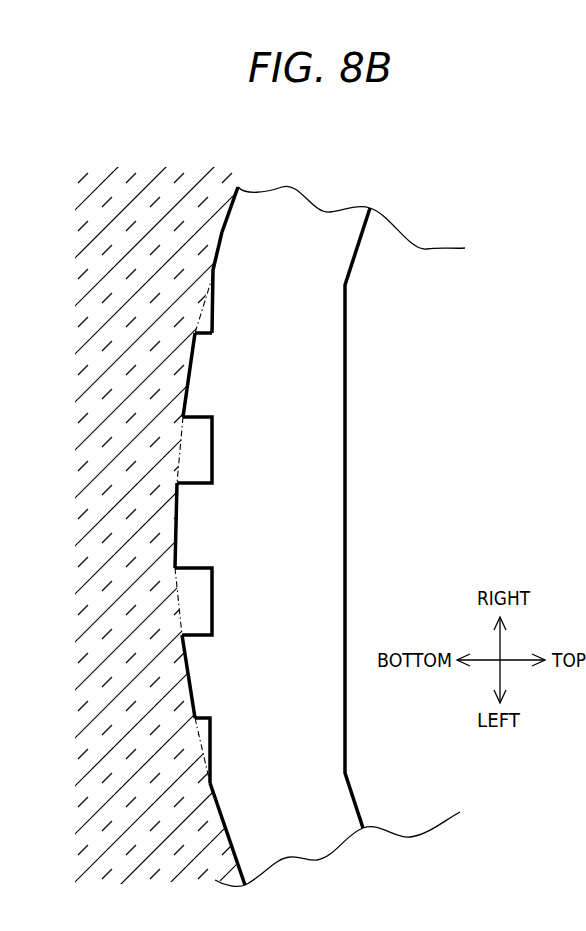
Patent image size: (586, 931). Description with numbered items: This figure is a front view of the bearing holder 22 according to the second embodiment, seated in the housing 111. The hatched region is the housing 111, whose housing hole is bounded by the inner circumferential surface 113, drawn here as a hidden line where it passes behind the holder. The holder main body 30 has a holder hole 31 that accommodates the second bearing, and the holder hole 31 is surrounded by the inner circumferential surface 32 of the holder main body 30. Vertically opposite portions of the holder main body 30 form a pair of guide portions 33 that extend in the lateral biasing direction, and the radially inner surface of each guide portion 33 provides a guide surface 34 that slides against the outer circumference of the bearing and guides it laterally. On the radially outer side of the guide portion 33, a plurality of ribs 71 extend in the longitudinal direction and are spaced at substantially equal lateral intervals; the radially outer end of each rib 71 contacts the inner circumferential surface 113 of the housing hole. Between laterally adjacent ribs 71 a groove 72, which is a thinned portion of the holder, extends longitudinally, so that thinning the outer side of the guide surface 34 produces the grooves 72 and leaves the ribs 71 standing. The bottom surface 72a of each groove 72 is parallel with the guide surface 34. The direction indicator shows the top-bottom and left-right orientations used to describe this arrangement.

The bearing holder 22 is at (218, 228).
The holder main body 30 is at (205, 246).
The holder hole 31 is at (421, 550).
The inner circumferential surface 32 is at (361, 802).
The guide portion 33 is at (272, 472).
The guide surface 34 is at (346, 407).
The rib 71 is at (202, 377).
The groove 72 is at (200, 317).
The bottom surface of groove 72a is at (211, 333).
The housing 111 is at (163, 826).
The inner circumferential surface of housing hole 113 is at (172, 447).